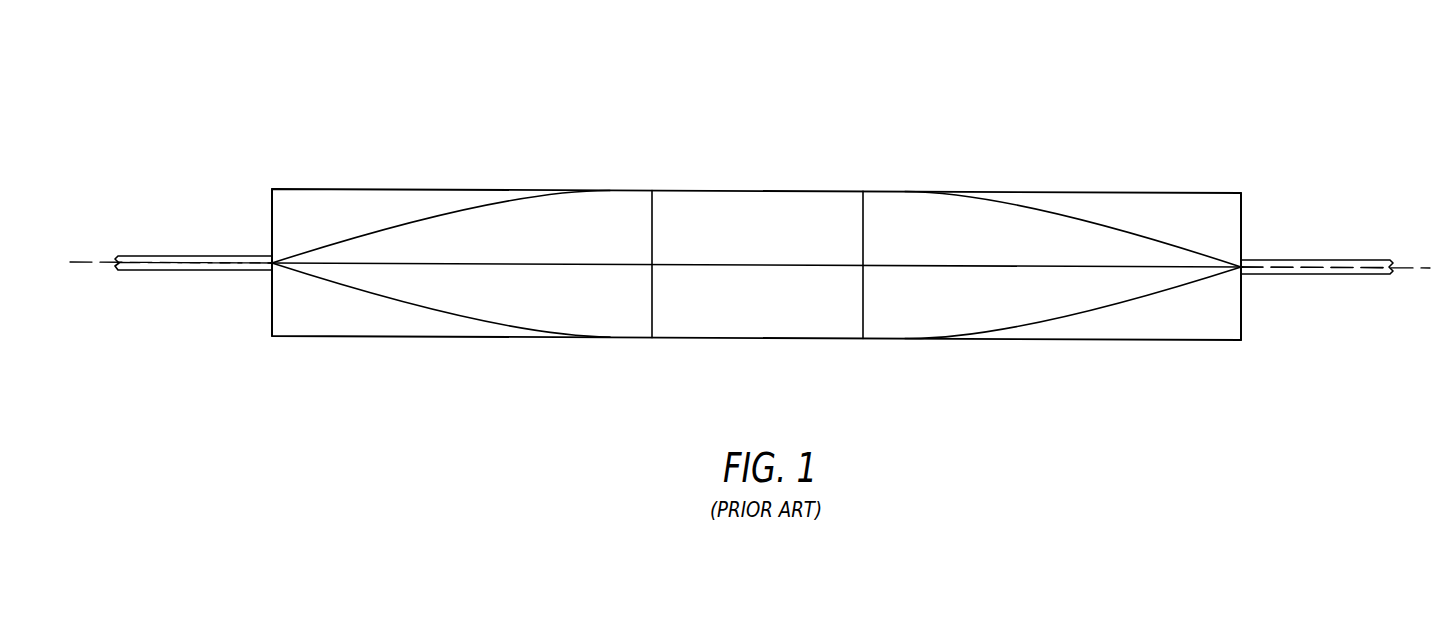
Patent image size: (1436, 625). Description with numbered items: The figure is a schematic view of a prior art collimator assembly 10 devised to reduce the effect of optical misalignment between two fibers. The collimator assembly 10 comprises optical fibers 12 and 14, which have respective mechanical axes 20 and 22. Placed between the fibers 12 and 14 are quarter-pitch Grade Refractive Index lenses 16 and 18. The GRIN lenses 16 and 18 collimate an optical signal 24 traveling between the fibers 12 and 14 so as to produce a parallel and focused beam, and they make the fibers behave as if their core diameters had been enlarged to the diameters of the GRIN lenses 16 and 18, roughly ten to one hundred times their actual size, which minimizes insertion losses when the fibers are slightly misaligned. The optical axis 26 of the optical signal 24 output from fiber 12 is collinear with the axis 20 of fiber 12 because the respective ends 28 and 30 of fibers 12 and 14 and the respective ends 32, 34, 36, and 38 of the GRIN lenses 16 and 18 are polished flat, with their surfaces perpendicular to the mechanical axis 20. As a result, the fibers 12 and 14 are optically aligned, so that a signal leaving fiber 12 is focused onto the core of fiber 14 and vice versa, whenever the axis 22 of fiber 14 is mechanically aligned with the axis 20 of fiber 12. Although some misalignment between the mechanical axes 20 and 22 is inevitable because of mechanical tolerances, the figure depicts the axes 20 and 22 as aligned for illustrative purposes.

The collimator assembly 10 is at (660, 130).
The optical fiber 12 is at (178, 255).
The optical fiber 14 is at (1362, 258).
The GRIN lens 16 is at (342, 189).
The GRIN lens 18 is at (1156, 192).
The axis 20 is at (143, 272).
The axis 22 is at (1333, 276).
The optical signal 24 is at (780, 210).
The optical axis 26 is at (740, 266).
The end 28 is at (272, 263).
The end 30 is at (1241, 267).
The end 32 is at (272, 323).
The end 34 is at (652, 318).
The end 36 is at (1241, 323).
The end 38 is at (862, 323).